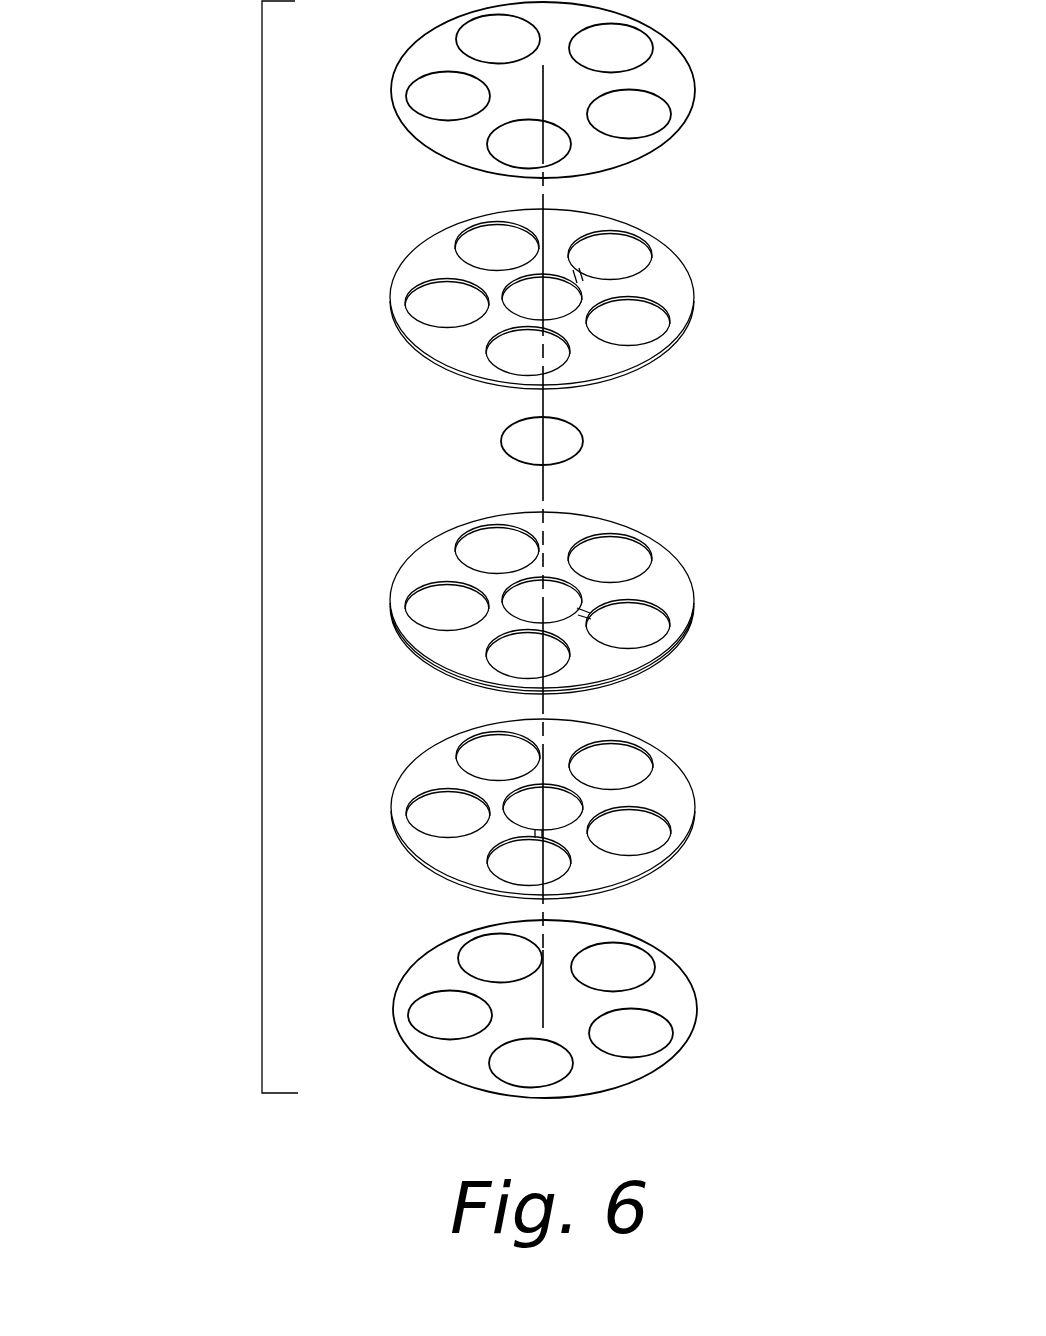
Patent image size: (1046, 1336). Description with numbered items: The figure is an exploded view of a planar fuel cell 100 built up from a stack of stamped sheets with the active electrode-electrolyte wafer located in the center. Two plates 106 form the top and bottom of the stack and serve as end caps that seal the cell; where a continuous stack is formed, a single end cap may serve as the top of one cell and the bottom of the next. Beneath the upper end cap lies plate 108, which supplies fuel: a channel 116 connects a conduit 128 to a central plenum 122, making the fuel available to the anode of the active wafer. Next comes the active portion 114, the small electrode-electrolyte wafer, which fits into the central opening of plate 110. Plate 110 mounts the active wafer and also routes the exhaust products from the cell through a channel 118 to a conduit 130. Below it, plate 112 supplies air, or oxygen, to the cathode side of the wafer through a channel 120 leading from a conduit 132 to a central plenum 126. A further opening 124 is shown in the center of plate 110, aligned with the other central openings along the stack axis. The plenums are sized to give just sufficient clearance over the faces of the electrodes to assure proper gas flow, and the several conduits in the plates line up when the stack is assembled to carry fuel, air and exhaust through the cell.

The fuel cell 100 is at (262, 530).
The end cap plate 106 is at (704, 93).
The fuel supply plate 108 is at (655, 368).
The wafer mounting plate 110 is at (694, 583).
The air supply plate 112 is at (701, 819).
The active portion 114 is at (592, 455).
The fuel channel 116 is at (586, 279).
The exhaust channel 118 is at (593, 617).
The air channel 120 is at (542, 839).
The fuel plenum 122 is at (520, 297).
The central aperture of second plate 124 is at (520, 600).
The air plenum 126 is at (527, 807).
The fuel conduit 128 is at (620, 250).
The exhaust conduit 130 is at (645, 627).
The air conduit 132 is at (512, 865).